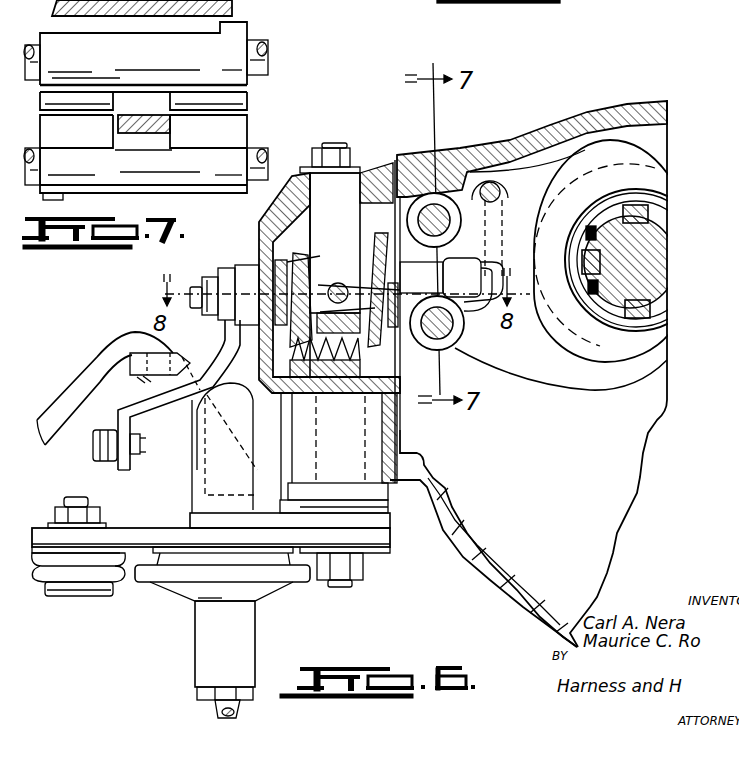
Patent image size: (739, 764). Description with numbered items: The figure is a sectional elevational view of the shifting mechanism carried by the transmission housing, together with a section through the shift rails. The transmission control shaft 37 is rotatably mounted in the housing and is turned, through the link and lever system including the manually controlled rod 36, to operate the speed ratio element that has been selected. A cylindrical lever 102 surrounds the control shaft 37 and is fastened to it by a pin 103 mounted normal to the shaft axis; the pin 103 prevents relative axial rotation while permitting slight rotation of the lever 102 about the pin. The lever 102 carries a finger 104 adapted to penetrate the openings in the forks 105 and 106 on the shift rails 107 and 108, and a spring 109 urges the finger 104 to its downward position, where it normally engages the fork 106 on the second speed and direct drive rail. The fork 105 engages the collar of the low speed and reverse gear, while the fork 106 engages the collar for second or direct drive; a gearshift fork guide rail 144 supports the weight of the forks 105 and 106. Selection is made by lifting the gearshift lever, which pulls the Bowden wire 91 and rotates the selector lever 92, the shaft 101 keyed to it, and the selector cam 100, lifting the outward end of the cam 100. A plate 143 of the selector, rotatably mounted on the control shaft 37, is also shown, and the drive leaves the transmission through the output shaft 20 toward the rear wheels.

In FIG. 6, the output shaft 20 is at (666, 263).
In FIG. 6, the manually controlled rod 36 is at (74, 382).
In FIG. 6, the transmission control shaft 37 is at (386, 228).
In FIG. 6, the Bowden wire 91 is at (108, 466).
In FIG. 6, the transmission selector lever 92 is at (208, 357).
In FIG. 6, the selector cam 100 is at (246, 276).
In FIG. 6, the shaft 101 is at (196, 287).
In FIG. 6, the cylindrical lever 102 is at (278, 245).
In FIG. 6, the pin 103 is at (337, 283).
In FIG. 7, the finger 104 is at (150, 116).
In FIG. 6, the finger 104 is at (459, 328).
In FIG. 7, the fork 105 is at (240, 97).
In FIG. 6, the fork 105 is at (627, 155).
In FIG. 7, the fork 106 is at (242, 129).
In FIG. 6, the fork 106 is at (440, 351).
In FIG. 7, the shift rail 107 is at (248, 44).
In FIG. 6, the shift rail 107 is at (443, 230).
In FIG. 6, the shift rail 108 is at (263, 203).
In FIG. 6, the spring 109 is at (284, 370).
In FIG. 6, the plate 143 is at (123, 584).
In FIG. 6, the gearshift fork guide rail 144 is at (505, 193).